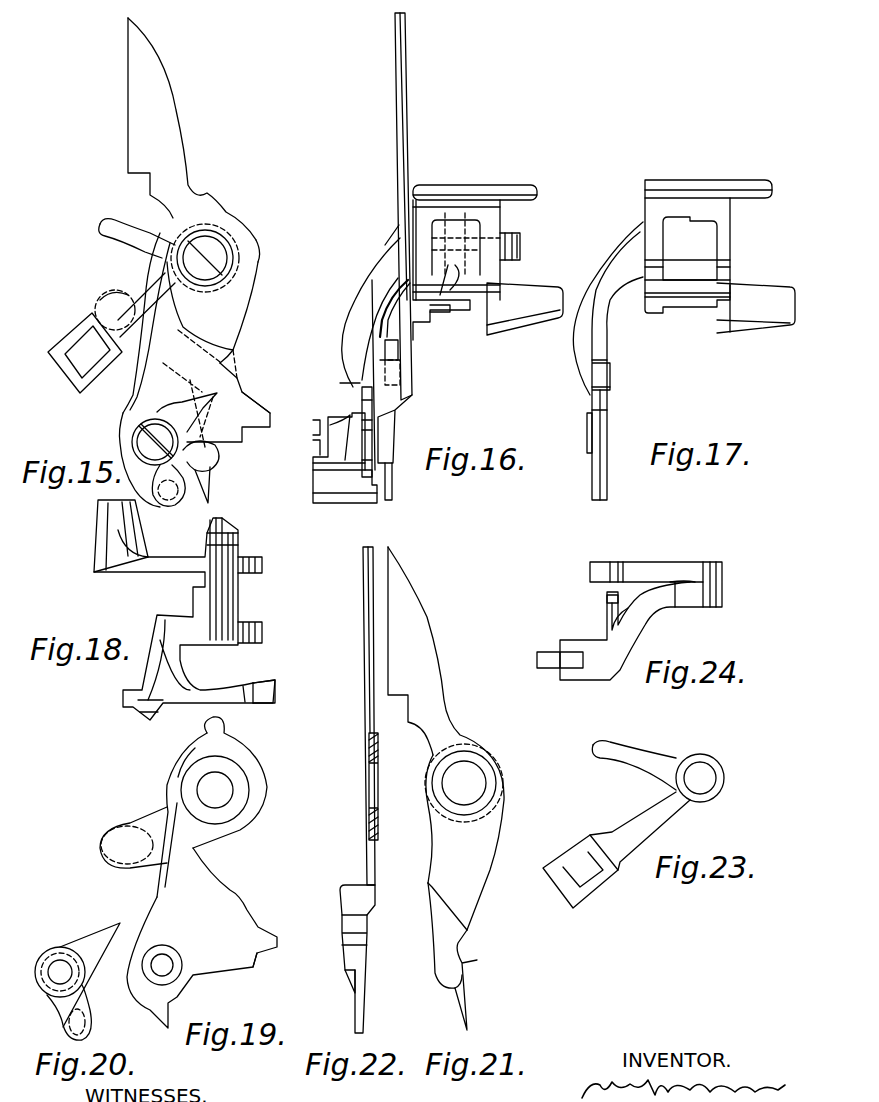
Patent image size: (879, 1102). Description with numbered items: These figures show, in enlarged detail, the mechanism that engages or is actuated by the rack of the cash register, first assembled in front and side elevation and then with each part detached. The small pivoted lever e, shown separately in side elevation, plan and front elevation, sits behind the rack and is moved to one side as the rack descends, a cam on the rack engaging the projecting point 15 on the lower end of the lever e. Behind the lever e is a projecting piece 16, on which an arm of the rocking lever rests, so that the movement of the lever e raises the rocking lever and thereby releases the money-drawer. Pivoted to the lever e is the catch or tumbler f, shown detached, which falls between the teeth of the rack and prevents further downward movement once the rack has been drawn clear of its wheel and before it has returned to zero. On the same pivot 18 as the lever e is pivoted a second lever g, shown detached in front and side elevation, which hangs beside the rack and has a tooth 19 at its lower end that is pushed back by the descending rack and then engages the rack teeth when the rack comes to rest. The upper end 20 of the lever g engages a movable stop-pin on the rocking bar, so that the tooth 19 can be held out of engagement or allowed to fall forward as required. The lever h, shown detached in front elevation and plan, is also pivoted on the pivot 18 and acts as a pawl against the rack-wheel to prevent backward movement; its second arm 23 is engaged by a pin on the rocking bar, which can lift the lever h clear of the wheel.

In FIG. 15, the projecting point 15 is at (257, 399).
In FIG. 16, the projecting point 15 is at (348, 378).
In FIG. 17, the projecting point 15 is at (611, 430).
In FIG. 18, the projecting point 15 is at (259, 703).
In FIG. 19, the projecting point 15 is at (252, 949).
In FIG. 15, the projecting piece 16 is at (110, 303).
In FIG. 16, the projecting piece 16 is at (525, 309).
In FIG. 17, the projecting piece 16 is at (756, 308).
In FIG. 18, the projecting piece 16 is at (121, 536).
In FIG. 19, the projecting piece 16 is at (133, 837).
In FIG. 15, the pivot 18 is at (205, 258).
In FIG. 16, the pivot 18 is at (522, 246).
In FIG. 15, the tooth 19 is at (211, 472).
In FIG. 16, the tooth 19 is at (400, 447).
In FIG. 22, the tooth 19 is at (367, 974).
In FIG. 21, the tooth 19 is at (458, 956).
In FIG. 15, the upper end 20 is at (192, 129).
In FIG. 22, the upper end 20 is at (345, 645).
In FIG. 21, the upper end 20 is at (437, 651).
In FIG. 15, the second arm 23 is at (122, 238).
In FIG. 24, the second arm 23 is at (656, 575).
In FIG. 23, the second arm 23 is at (657, 760).
In FIG. 15, the lever e is at (194, 367).
In FIG. 16, the lever e is at (435, 276).
In FIG. 17, the lever e is at (672, 287).
In FIG. 18, the lever e is at (184, 619).
In FIG. 19, the lever e is at (202, 872).
In FIG. 15, the lever g is at (213, 249).
In FIG. 16, the lever g is at (409, 206).
In FIG. 22, the lever g is at (358, 731).
In FIG. 21, the lever g is at (464, 802).
In FIG. 15, the lever h is at (111, 333).
In FIG. 16, the lever h is at (419, 322).
In FIG. 24, the lever h is at (620, 631).
In FIG. 23, the lever h is at (616, 850).
In FIG. 15, the catch or tumbler f is at (171, 449).
In FIG. 16, the catch or tumbler f is at (345, 458).
In FIG. 19, the catch or tumbler f is at (141, 965).
In FIG. 20, the catch or tumbler f is at (77, 981).